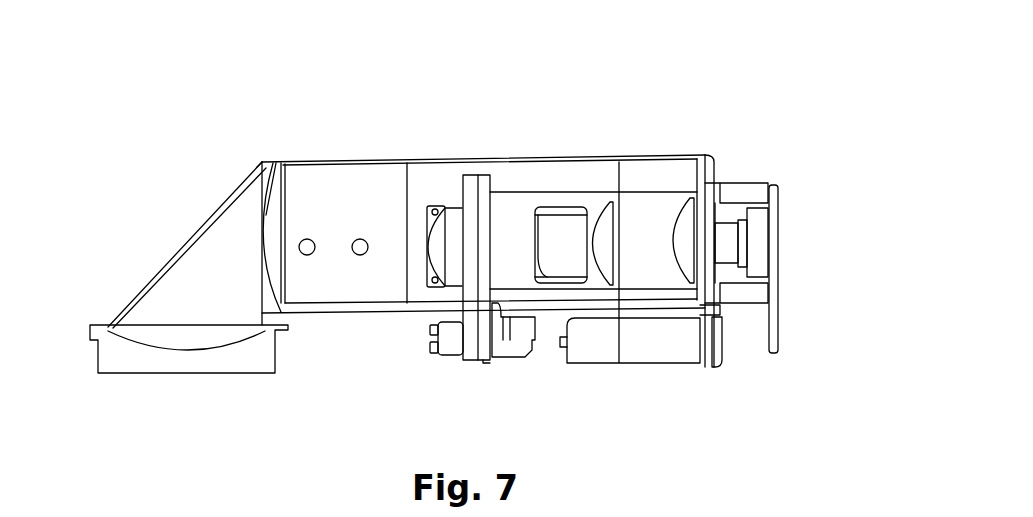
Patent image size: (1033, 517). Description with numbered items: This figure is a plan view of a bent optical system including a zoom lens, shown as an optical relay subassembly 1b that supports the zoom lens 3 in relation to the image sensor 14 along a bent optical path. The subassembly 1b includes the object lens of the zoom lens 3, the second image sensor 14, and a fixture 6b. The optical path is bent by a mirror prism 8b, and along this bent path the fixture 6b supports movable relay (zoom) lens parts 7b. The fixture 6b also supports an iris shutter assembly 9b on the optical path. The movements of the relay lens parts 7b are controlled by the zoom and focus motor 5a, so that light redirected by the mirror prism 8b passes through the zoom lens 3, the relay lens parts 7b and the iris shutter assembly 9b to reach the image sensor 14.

The optical relay subassembly 1b is at (716, 67).
The zoom lens 3 is at (262, 148).
The zoom and focus motor 5a is at (578, 358).
The fixture 6b is at (612, 192).
The movable relay lens parts 7b is at (720, 157).
The mirror prism 8b is at (203, 255).
The iris shutter assembly 9b is at (475, 243).
The image sensor 14 is at (758, 238).